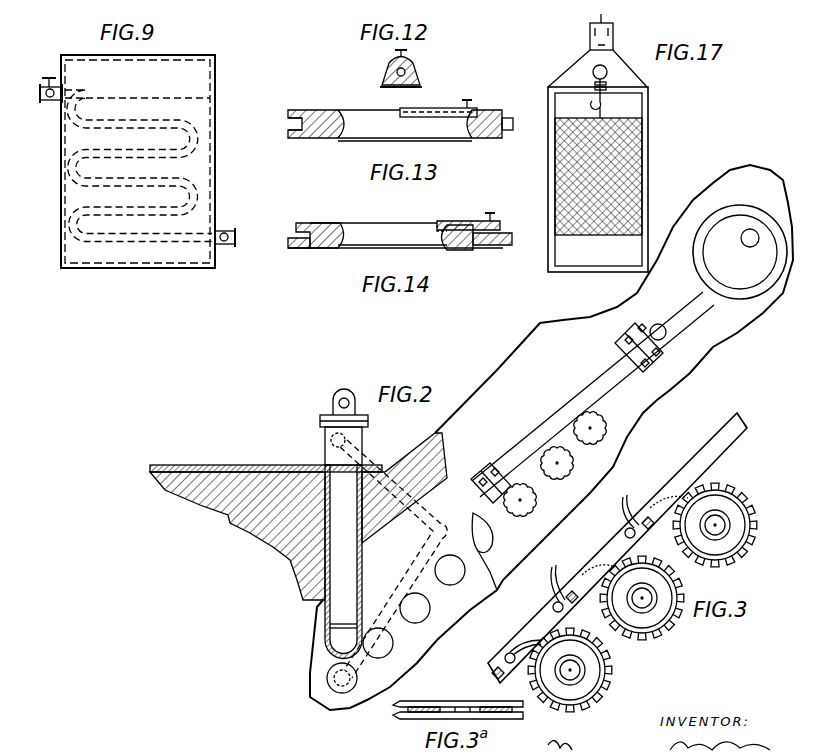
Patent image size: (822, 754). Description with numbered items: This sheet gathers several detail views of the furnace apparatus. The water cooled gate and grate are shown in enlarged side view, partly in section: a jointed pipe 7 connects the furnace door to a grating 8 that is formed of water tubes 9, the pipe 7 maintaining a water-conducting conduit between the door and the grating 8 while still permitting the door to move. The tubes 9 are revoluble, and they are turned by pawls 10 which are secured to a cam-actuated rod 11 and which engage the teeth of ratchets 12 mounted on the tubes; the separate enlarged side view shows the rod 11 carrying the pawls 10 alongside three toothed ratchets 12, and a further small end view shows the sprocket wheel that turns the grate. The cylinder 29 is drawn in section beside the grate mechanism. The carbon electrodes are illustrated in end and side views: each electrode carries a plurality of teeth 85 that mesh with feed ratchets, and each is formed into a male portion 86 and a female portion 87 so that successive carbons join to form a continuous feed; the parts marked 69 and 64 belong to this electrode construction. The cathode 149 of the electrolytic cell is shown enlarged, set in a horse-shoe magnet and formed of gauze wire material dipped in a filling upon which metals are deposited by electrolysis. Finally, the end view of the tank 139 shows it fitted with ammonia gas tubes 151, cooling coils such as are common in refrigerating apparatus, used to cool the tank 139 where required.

In FIG. 9, the tank 139 is at (215, 78).
In FIG. 9, the ammonia gas tubes 151 is at (196, 140).
In FIG. 12, the clamp button 69 is at (420, 78).
In FIG. 13, the clamp button 69 is at (357, 140).
In FIG. 13, the female portion 87 is at (288, 124).
In FIG. 14, the female portion 87 is at (312, 250).
In FIG. 13, the teeth 85 is at (313, 140).
In FIG. 13, the male portion 86 is at (510, 120).
In FIG. 14, the male portion 86 is at (500, 248).
In FIG. 14, the plate 64 is at (392, 224).
In FIG. 17, the cathode 149 is at (613, 158).
In FIG. 2, the jointed pipe 7 is at (398, 480).
In FIG. 2, the cam-actuated rod 11 is at (603, 388).
In FIG. 3, the cam-actuated rod 11 is at (718, 455).
In FIG. 2, the ratchets 12 is at (527, 503).
In FIG. 3, the ratchets 12 is at (751, 553).
In FIG. 2, the cylinder 29 is at (356, 524).
In FIG. 2, the grating 8 is at (414, 606).
In FIG. 2, the water tubes 9 is at (457, 560).
In FIG. 3, the pawls 10 is at (550, 575).